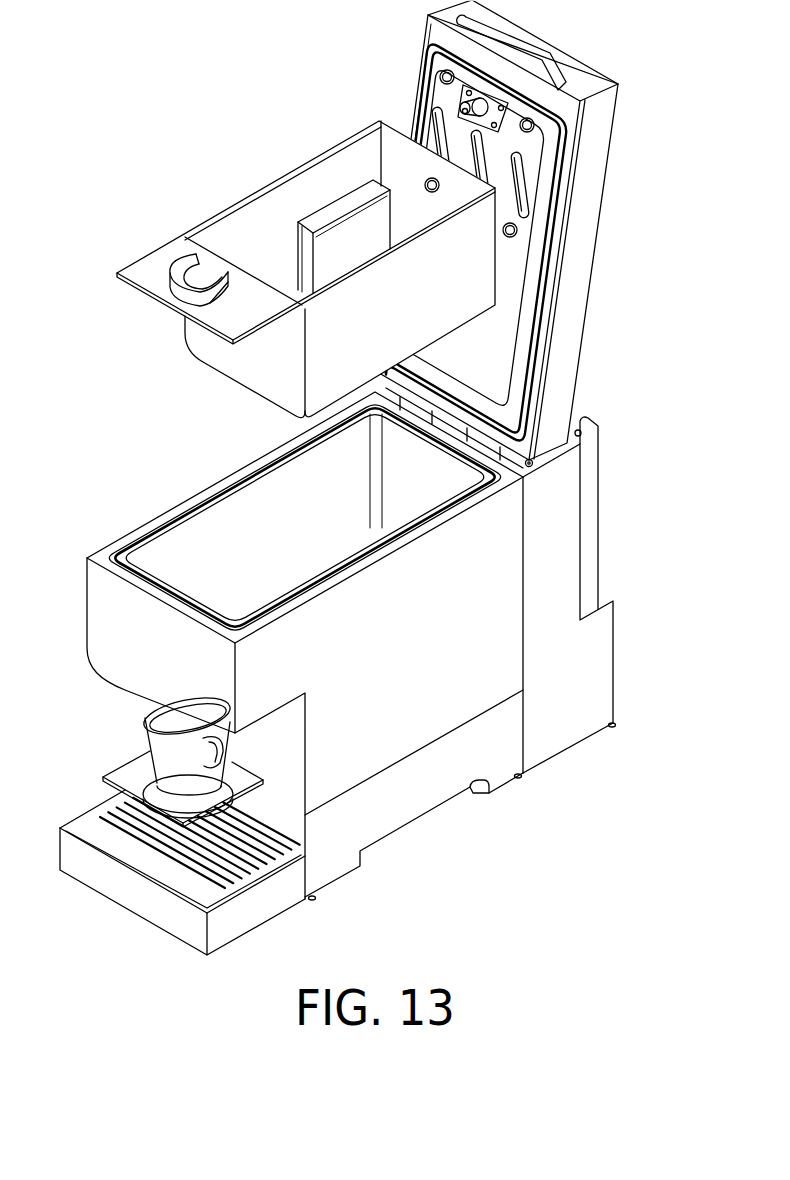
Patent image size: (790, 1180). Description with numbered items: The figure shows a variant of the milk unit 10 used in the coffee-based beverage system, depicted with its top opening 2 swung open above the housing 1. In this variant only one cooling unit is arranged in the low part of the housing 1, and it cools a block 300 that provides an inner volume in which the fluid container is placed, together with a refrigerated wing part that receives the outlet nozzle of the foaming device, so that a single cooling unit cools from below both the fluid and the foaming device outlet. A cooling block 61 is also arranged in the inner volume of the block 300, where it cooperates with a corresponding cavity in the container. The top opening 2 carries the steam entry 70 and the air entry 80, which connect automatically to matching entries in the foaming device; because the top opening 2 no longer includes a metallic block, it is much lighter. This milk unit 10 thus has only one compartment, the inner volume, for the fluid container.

The housing 1 is at (494, 593).
The top opening 2 is at (593, 190).
The milk unit 10 is at (609, 367).
The cooling block 61 is at (303, 247).
The steam entry 70 is at (463, 105).
The air entry 80 is at (432, 186).
The block 300 is at (306, 269).